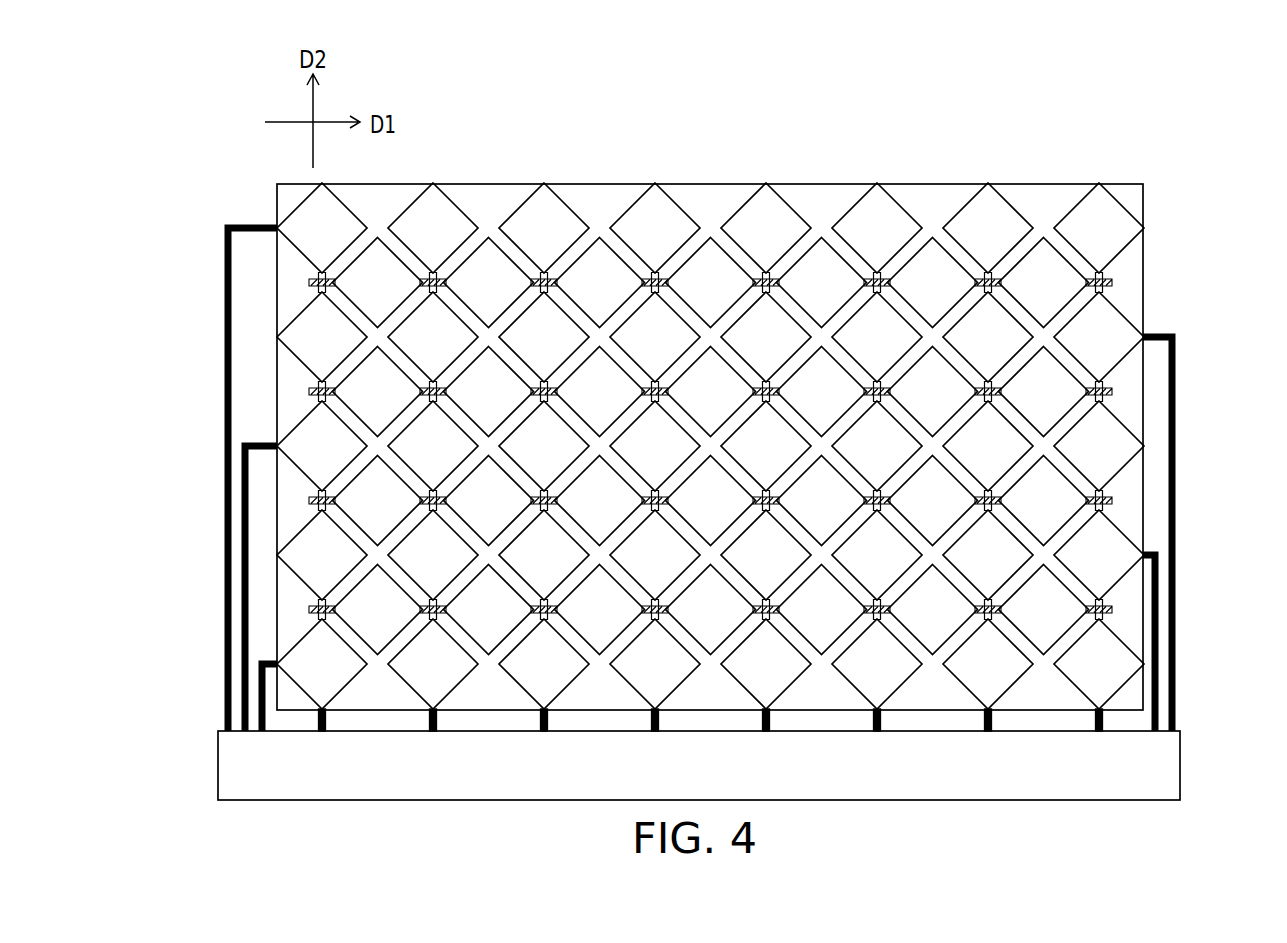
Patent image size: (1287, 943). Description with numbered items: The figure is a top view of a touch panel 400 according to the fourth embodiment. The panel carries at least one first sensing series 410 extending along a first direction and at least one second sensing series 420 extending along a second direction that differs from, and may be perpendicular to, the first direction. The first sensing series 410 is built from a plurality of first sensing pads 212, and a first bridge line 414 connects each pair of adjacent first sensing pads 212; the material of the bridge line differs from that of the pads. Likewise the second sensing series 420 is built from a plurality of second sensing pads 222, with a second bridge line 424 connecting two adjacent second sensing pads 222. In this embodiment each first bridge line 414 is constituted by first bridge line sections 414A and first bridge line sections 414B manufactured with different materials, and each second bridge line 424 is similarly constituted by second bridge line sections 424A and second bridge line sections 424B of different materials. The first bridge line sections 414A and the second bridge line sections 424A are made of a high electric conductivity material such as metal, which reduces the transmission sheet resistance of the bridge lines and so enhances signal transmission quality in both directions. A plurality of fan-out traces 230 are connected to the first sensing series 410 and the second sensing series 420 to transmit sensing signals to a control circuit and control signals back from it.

The touch panel 400 is at (1248, 817).
The first sensing series 410 is at (718, 88).
The first sensing pad 212 is at (599, 245).
The first bridge line 414 is at (653, 133).
The first bridge line section 414A is at (752, 281).
The first bridge line section 414B is at (670, 281).
The second sensing series 420 is at (988, 85).
The second sensing pad 222 is at (880, 205).
The second bridge line 424 is at (1037, 128).
The second bridge line section 424A is at (885, 282).
The second bridge line section 424B is at (888, 382).
The fan-out trace 230 is at (223, 370).